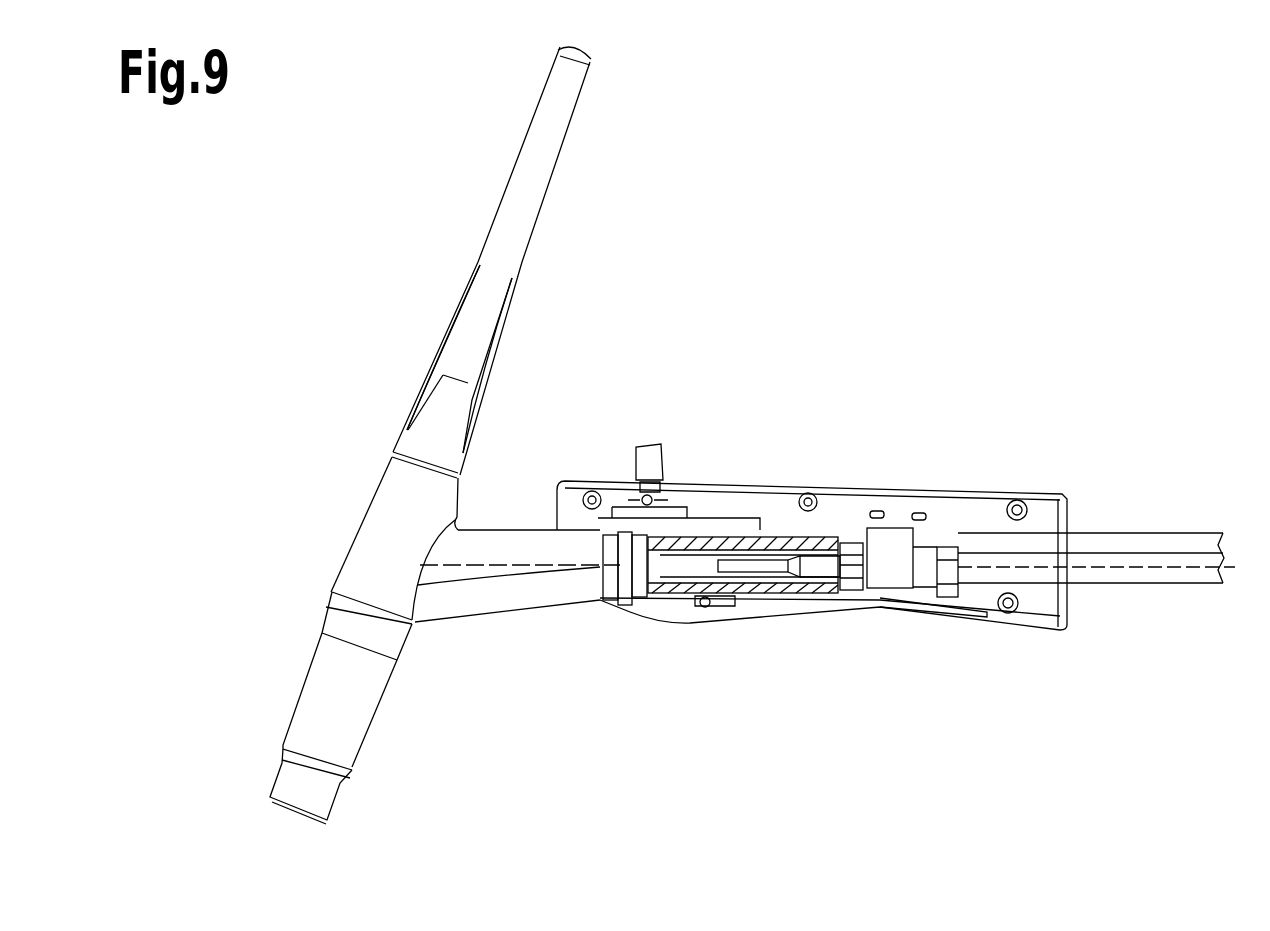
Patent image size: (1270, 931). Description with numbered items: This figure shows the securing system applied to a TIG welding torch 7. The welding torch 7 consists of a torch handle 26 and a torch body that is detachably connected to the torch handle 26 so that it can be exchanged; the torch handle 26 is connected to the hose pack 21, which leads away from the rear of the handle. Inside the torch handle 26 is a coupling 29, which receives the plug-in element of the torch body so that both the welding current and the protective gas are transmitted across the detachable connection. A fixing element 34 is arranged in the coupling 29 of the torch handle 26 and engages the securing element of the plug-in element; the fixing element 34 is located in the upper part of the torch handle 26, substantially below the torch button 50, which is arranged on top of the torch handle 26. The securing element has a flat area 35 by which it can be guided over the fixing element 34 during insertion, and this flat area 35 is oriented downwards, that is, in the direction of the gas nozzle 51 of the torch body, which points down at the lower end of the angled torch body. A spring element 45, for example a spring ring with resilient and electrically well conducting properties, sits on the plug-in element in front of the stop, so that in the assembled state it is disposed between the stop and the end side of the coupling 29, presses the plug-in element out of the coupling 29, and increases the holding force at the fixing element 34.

The welding torch 7 is at (283, 306).
The gas nozzle 51 is at (357, 715).
The torch handle 26 is at (845, 507).
The torch button 50 is at (647, 460).
The spring element 45 is at (652, 560).
The fixing element 34 is at (730, 547).
The coupling 29 is at (782, 587).
The flat area 35 is at (737, 593).
The hose pack 21 is at (1153, 545).